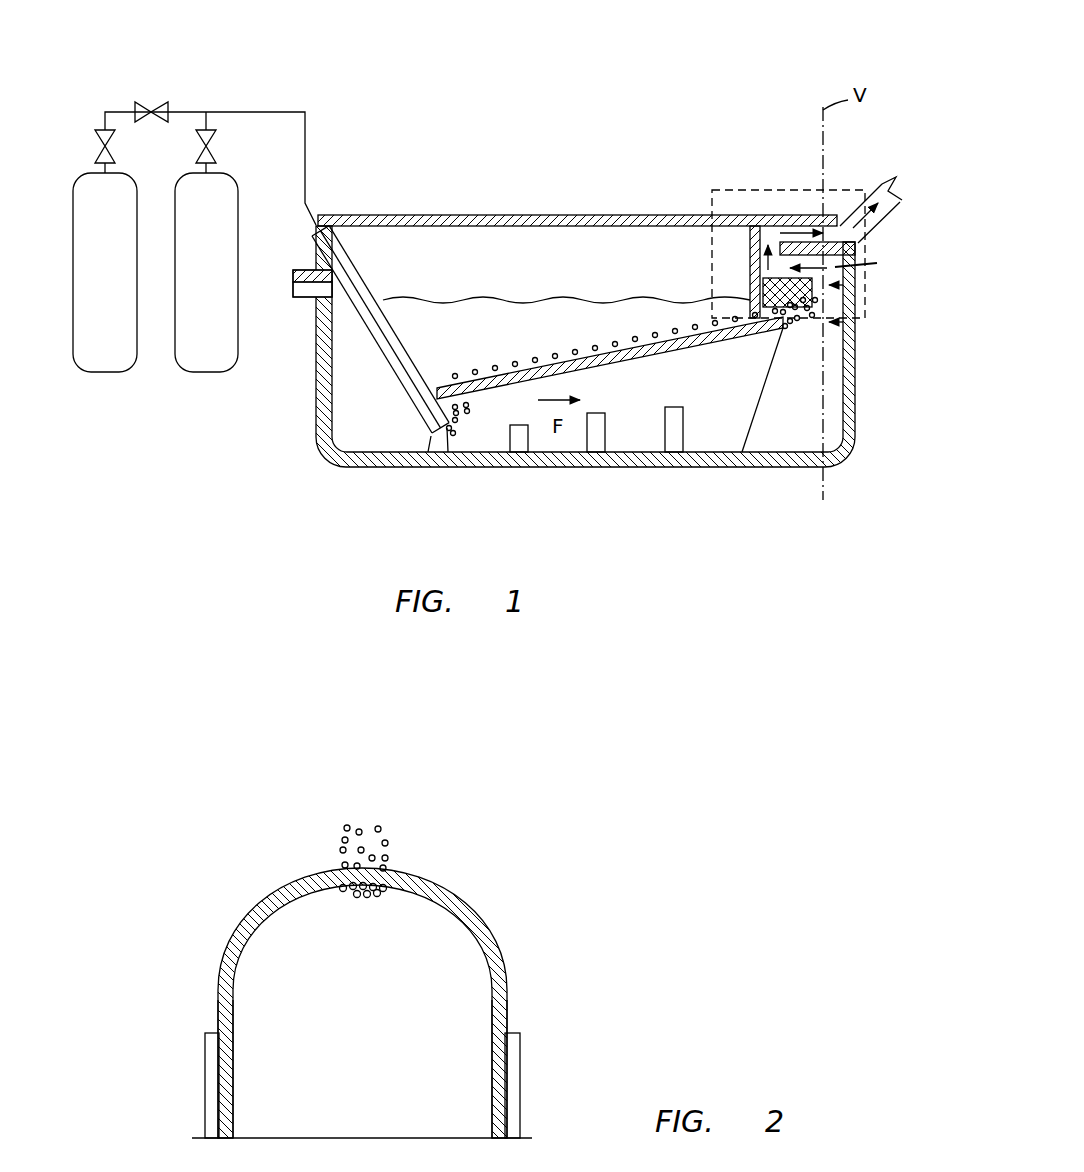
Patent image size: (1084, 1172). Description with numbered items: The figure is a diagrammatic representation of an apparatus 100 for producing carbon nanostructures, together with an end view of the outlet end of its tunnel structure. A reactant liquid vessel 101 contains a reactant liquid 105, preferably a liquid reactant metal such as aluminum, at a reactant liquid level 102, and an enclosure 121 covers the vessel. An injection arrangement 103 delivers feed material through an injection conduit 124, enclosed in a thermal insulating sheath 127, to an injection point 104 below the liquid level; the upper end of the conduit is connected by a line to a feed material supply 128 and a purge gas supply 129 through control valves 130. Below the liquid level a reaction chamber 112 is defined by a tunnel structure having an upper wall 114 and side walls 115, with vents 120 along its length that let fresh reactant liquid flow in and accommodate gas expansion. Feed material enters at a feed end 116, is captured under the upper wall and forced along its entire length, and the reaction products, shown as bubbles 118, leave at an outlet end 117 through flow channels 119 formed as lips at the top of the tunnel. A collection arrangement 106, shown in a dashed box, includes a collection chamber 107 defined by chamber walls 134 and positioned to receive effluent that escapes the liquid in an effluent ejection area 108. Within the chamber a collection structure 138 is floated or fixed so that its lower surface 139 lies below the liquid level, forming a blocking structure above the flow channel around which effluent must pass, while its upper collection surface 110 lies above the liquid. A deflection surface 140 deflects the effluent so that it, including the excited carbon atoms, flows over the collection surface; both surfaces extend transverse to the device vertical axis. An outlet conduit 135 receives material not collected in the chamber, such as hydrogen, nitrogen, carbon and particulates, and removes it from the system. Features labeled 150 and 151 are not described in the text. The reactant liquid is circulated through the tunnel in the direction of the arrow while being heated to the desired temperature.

In FIG. 1, the apparatus 100 is at (775, 92).
In FIG. 1, the reactant liquid vessel 101 is at (317, 392).
In FIG. 1, the reactant liquid level 102 is at (482, 300).
In FIG. 1, the injection arrangement 103 is at (360, 418).
In FIG. 1, the injection point 104 is at (450, 432).
In FIG. 1, the reactant liquid 105 is at (499, 339).
In FIG. 1, the collection arrangement 106 is at (712, 198).
In FIG. 1, the collection chamber 107 is at (845, 268).
In FIG. 1, the effluent ejection area 108 is at (845, 275).
In FIG. 1, the collection surface 110 is at (767, 230).
In FIG. 1, the reaction chamber 112 is at (700, 390).
In FIG. 1, the upper wall 114 is at (600, 352).
In FIG. 2, the upper wall 114 is at (433, 887).
In FIG. 2, the side walls 115 is at (217, 1020).
In FIG. 1, the feed end 116 is at (415, 438).
In FIG. 1, the outlet end 117 is at (778, 378).
In FIG. 1, the bubbles 118 is at (497, 401).
In FIG. 2, the bubbles 118 is at (385, 840).
In FIG. 2, the flow channels 119 is at (350, 882).
In FIG. 1, the vents 120 is at (673, 440).
In FIG. 2, the vents 120 is at (205, 1088).
In FIG. 1, the enclosure 121 is at (543, 215).
In FIG. 1, the injection conduit 124 is at (343, 277).
In FIG. 1, the thermal insulating sheath 127 is at (367, 283).
In FIG. 1, the feed material supply 128 is at (224, 279).
In FIG. 1, the purge gas supply 129 is at (122, 279).
In FIG. 1, the control valves 130 is at (155, 95).
In FIG. 1, the chamber walls 134 is at (800, 215).
In FIG. 1, the outlet conduit 135 is at (863, 183).
In FIG. 1, the collection structure 138 is at (762, 300).
In FIG. 1, the lower surface 139 is at (795, 316).
In FIG. 1, the deflection surface 140 is at (877, 263).
In FIG. 1, the channel 150 is at (857, 256).
In FIG. 1, the opening 151 is at (829, 290).